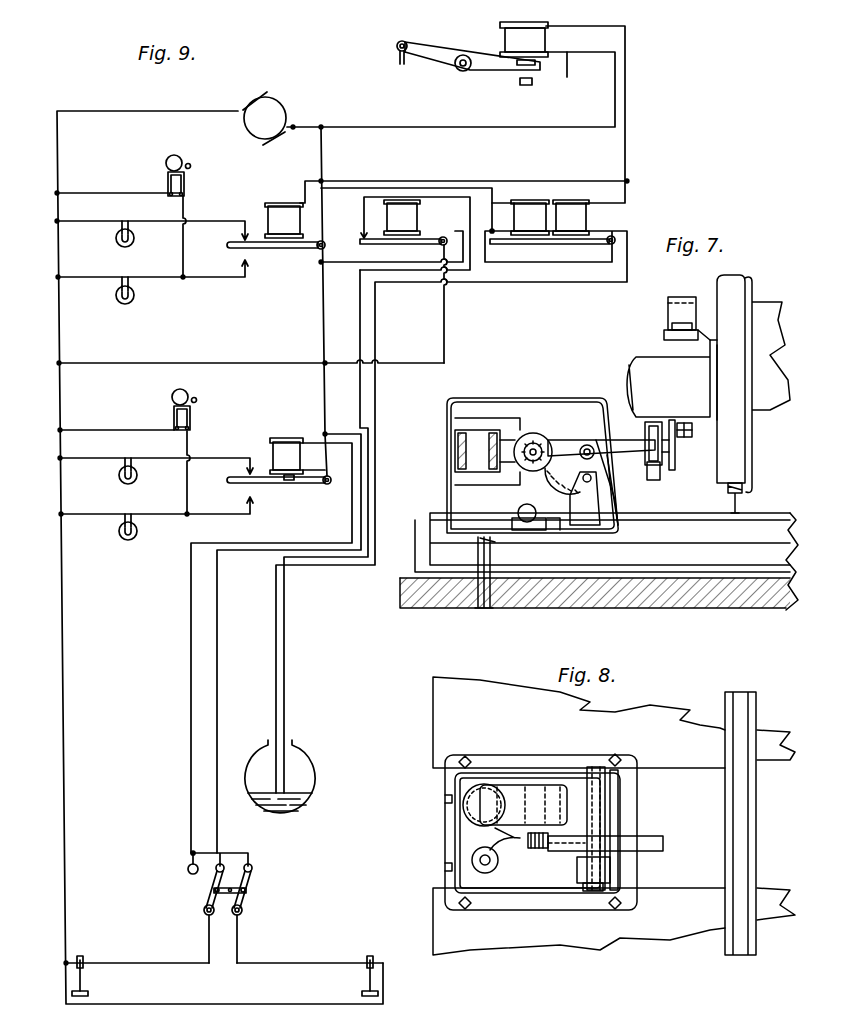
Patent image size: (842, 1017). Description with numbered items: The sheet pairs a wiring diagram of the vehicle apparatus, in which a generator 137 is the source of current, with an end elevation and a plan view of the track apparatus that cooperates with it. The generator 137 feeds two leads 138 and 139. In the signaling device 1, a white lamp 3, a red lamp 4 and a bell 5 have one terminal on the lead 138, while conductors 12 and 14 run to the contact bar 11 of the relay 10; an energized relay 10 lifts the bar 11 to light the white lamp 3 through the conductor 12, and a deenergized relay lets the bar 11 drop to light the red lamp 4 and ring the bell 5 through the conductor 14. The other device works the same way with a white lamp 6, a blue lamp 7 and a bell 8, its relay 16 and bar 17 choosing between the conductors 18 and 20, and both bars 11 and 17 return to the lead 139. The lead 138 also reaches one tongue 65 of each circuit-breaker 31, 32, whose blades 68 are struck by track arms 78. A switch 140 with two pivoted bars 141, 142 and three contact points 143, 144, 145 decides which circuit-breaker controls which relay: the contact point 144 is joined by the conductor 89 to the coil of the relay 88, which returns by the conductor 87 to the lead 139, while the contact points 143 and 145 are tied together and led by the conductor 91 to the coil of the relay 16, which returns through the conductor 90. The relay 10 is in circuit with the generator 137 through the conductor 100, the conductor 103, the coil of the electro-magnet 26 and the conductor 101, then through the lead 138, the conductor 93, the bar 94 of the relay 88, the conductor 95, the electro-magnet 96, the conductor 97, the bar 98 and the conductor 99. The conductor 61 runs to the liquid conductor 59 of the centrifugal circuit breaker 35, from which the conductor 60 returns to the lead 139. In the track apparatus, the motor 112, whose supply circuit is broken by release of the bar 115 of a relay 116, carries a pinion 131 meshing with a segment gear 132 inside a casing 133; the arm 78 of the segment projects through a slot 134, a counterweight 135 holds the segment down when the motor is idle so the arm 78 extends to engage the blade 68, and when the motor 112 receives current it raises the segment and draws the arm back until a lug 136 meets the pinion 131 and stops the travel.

In FIG. 9, the signaling device 1 is at (48, 256).
In FIG. 9, the white lamp 3 is at (135, 240).
In FIG. 9, the red lamp 4 is at (135, 297).
In FIG. 9, the bell 5 is at (182, 157).
In FIG. 9, the white lamp 6 is at (138, 478).
In FIG. 9, the blue lamp 7 is at (138, 540).
In FIG. 9, the bell 8 is at (187, 391).
In FIG. 9, the relay 10 is at (278, 210).
In FIG. 9, the contact bar 11 is at (262, 250).
In FIG. 9, the conductor 12 is at (200, 220).
In FIG. 9, the conductor 14 is at (200, 280).
In FIG. 9, the relay 16 is at (283, 440).
In FIG. 9, the contact bar 17 is at (270, 485).
In FIG. 9, the conductor 18 is at (206, 455).
In FIG. 9, the conductor 20 is at (200, 516).
In FIG. 9, the electro-magnet 26 is at (505, 38).
In FIG. 9, the circuit-breaker 31 is at (90, 972).
In FIG. 7, the circuit-breaker 31 is at (662, 424).
In FIG. 9, the circuit-breaker 32 is at (360, 974).
In FIG. 9, the mercury cup 35 is at (298, 732).
In FIG. 9, the liquid conductor 59 is at (300, 786).
In FIG. 9, the conductor 60 is at (355, 430).
In FIG. 9, the conductor 61 is at (600, 232).
In FIG. 9, the tongue 65 is at (76, 960).
In FIG. 9, the blade 68 is at (82, 960).
In FIG. 7, the blade 68 is at (662, 450).
In FIG. 7, the arm 78 is at (616, 440).
In FIG. 8, the arm 78 is at (645, 838).
In FIG. 9, the conductor 87 is at (449, 238).
In FIG. 9, the relay 88 is at (402, 205).
In FIG. 9, the conductor 89 is at (220, 652).
In FIG. 9, the conductor 90 is at (314, 470).
In FIG. 9, the conductor 91 is at (354, 496).
In FIG. 9, the conductor 93 is at (446, 330).
In FIG. 9, the bar 94 is at (434, 250).
In FIG. 9, the conductor 95 is at (364, 214).
In FIG. 9, the electro-magnet 96 is at (530, 204).
In FIG. 9, the conductor 97 is at (522, 262).
In FIG. 9, the bar 98 is at (568, 242).
In FIG. 9, the conductor 99 is at (358, 188).
In FIG. 9, the conductor 100 is at (312, 180).
In FIG. 9, the conductor 101 is at (492, 110).
In FIG. 9, the conductor 103 is at (626, 82).
In FIG. 7, the motor 112 is at (516, 418).
In FIG. 8, the motor 112 is at (528, 795).
In FIG. 7, the bar 115 is at (545, 530).
In FIG. 7, the relay 116 is at (532, 530).
In FIG. 7, the pinion 131 is at (535, 440).
In FIG. 8, the pinion 131 is at (538, 848).
In FIG. 7, the segment gear 132 is at (566, 450).
In FIG. 8, the segment gear 132 is at (563, 842).
In FIG. 7, the casing 133 is at (447, 452).
In FIG. 8, the casing 133 is at (453, 836).
In FIG. 7, the slot 134 is at (615, 465).
In FIG. 8, the slot 134 is at (620, 865).
In FIG. 7, the counterweight 135 is at (597, 515).
In FIG. 8, the counterweight 135 is at (605, 878).
In FIG. 7, the lug 136 is at (615, 490).
In FIG. 9, the generator 137 is at (272, 104).
In FIG. 9, the lead 138 is at (132, 108).
In FIG. 9, the lead 139 is at (321, 314).
In FIG. 9, the switch 140 is at (250, 885).
In FIG. 9, the pivoted bar 141 is at (204, 904).
In FIG. 9, the pivoted bar 142 is at (246, 904).
In FIG. 9, the contact point 143 is at (188, 864).
In FIG. 9, the contact point 144 is at (224, 866).
In FIG. 9, the contact point 145 is at (254, 872).